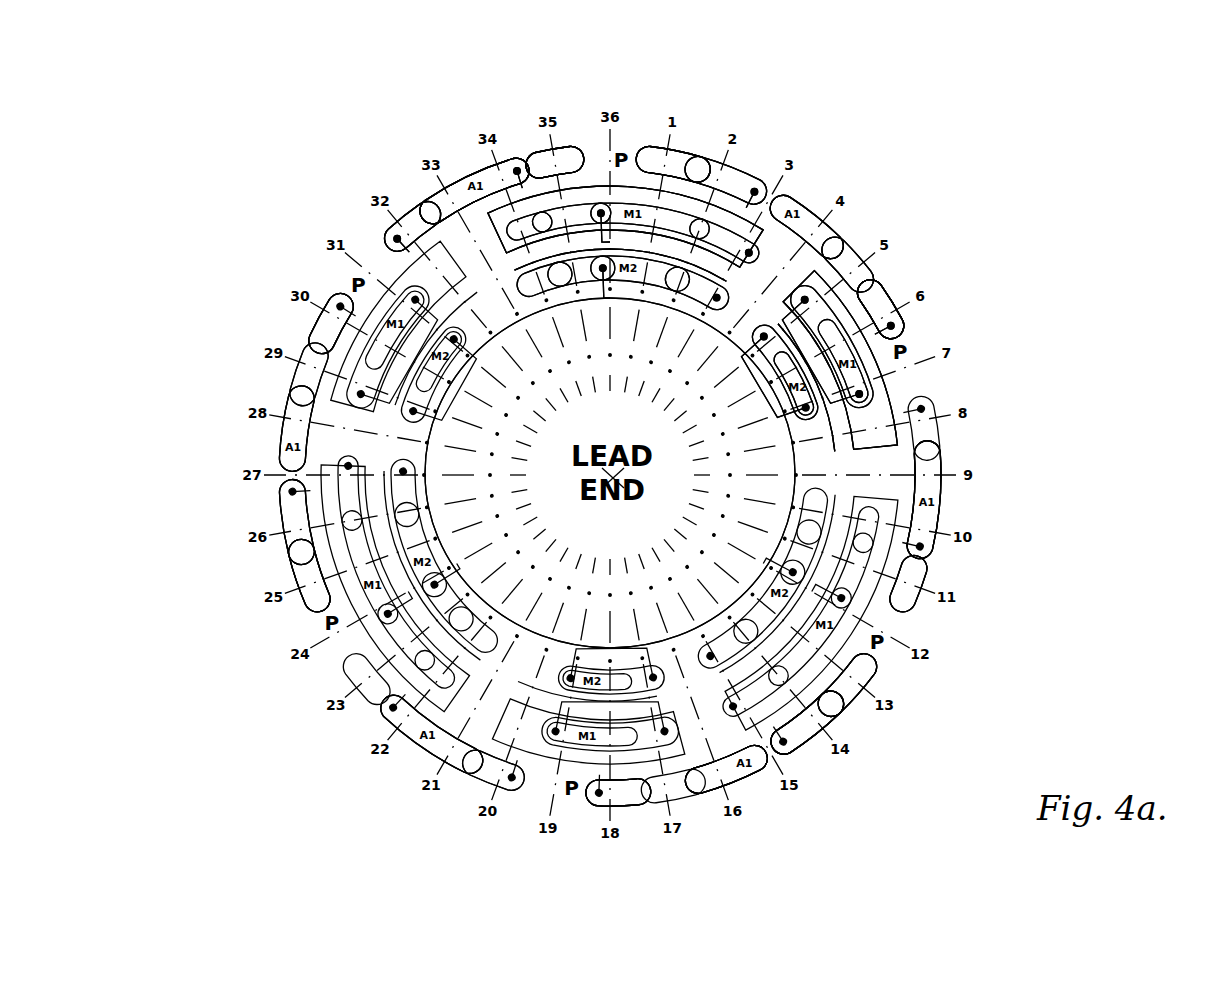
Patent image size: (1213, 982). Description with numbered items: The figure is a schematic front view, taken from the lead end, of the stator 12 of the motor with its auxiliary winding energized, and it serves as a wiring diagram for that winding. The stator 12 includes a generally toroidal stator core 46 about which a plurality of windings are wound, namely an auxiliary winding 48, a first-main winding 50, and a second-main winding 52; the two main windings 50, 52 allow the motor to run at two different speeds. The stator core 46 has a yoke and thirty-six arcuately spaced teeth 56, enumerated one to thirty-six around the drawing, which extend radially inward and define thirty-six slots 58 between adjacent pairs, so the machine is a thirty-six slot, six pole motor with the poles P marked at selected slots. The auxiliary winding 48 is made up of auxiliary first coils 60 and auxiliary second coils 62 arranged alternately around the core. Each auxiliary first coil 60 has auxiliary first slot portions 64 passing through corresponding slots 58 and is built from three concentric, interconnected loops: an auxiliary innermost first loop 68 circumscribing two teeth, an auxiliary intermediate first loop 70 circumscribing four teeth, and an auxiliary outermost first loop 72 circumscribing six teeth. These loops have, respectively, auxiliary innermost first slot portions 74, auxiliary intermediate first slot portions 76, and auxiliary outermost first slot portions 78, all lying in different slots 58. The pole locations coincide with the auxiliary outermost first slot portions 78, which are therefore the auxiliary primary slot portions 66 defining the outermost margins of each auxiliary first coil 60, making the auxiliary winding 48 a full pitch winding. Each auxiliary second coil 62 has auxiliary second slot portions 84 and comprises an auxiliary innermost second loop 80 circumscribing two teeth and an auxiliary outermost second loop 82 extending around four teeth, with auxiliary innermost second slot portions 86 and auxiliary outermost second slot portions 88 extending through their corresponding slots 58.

The stator 12 is at (800, 70).
The stator core 46 is at (808, 106).
The auxiliary winding 48 is at (950, 298).
The first-main winding 50 is at (750, 253).
The second-main winding 52 is at (718, 296).
The teeth 56 is at (510, 140).
The slot 58 is at (572, 118).
The auxiliary first coils 60 is at (756, 152).
The auxiliary second coils 62 is at (448, 154).
The auxiliary first slot portions 64 is at (620, 150).
The auxiliary primary slot portions 66 is at (270, 258).
The auxiliary innermost first loop 68 is at (838, 243).
The auxiliary intermediate first loop 70 is at (880, 283).
The auxiliary outermost first loop 72 is at (900, 320).
The auxiliary innermost first slot portions 74 is at (806, 776).
The auxiliary intermediate first slot portions 76 is at (802, 774).
The auxiliary outermost first slot portions 78 is at (620, 476).
The auxiliary innermost second loop 80 is at (940, 585).
The auxiliary outermost second loop 82 is at (925, 600).
The auxiliary second slot portions 84 is at (540, 148).
The auxiliary innermost second slot portions 86 is at (451, 137).
The auxiliary outermost second slot portions 88 is at (466, 150).